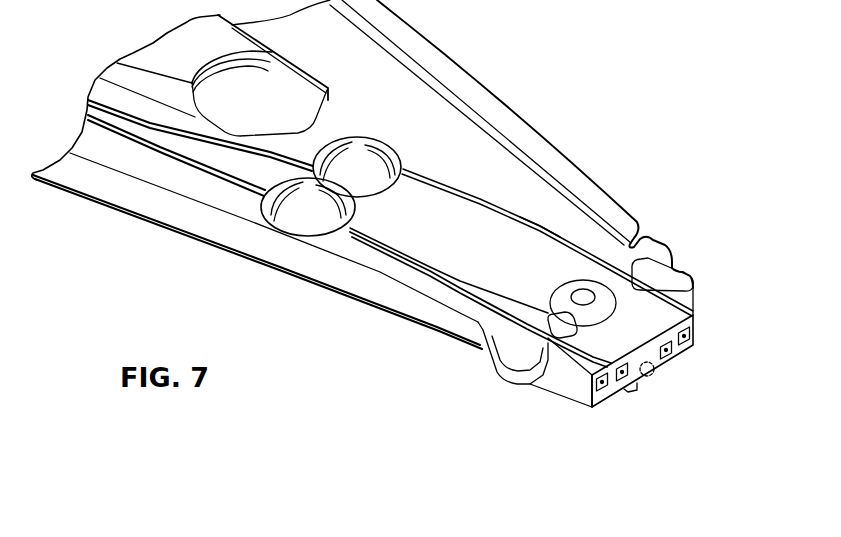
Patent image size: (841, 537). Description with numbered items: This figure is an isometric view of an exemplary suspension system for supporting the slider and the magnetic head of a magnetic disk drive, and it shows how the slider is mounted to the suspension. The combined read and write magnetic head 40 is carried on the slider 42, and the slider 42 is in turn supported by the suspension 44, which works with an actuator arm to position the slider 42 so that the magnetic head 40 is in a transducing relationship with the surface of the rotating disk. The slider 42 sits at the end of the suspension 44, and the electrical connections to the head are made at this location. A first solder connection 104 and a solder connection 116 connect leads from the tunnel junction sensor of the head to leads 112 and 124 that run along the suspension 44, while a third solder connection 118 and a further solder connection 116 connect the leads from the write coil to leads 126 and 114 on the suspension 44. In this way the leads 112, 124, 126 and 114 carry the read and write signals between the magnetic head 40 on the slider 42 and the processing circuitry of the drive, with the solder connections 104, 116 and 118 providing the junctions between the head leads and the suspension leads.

The magnetic head 40 is at (653, 377).
The slider 42 is at (535, 395).
The suspension 44 is at (510, 94).
The first solder connection 104 is at (590, 403).
The lead 112 is at (377, 247).
The lead 114 is at (558, 233).
The solder connection 116 is at (620, 382).
The third solder connection 118 is at (670, 357).
The lead 124 is at (423, 262).
The lead 126 is at (480, 200).